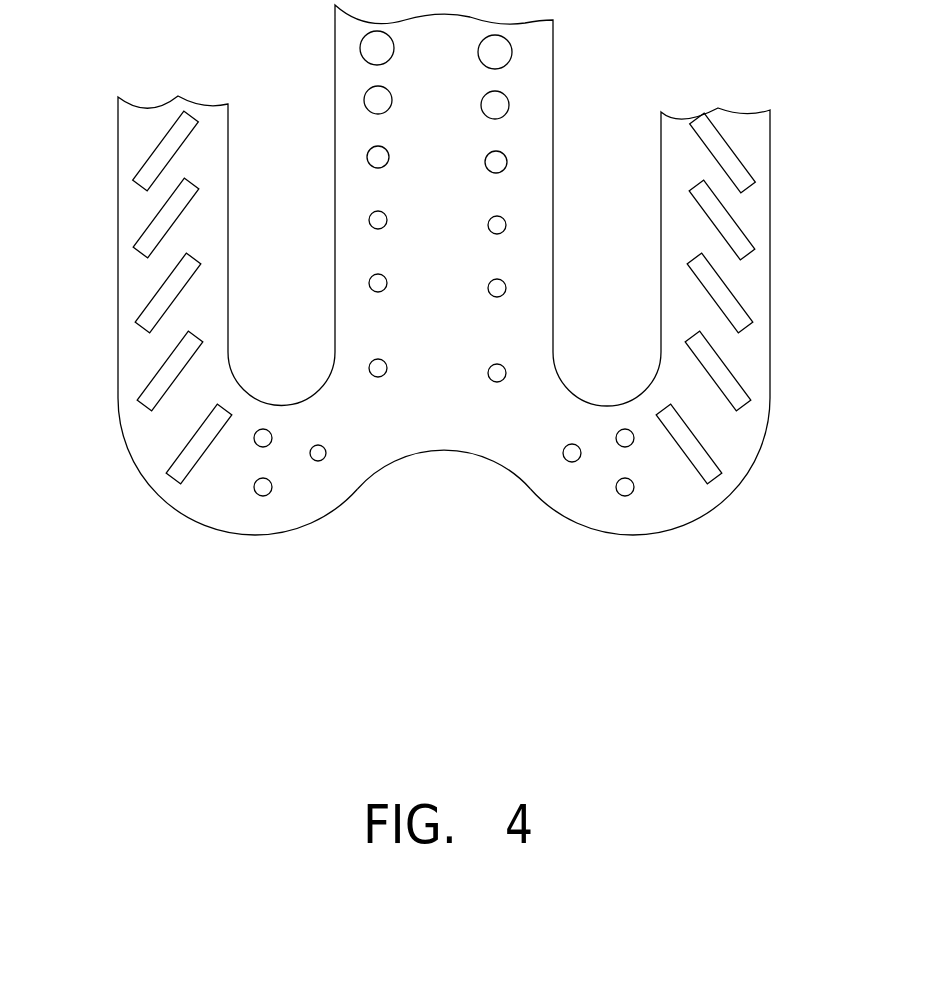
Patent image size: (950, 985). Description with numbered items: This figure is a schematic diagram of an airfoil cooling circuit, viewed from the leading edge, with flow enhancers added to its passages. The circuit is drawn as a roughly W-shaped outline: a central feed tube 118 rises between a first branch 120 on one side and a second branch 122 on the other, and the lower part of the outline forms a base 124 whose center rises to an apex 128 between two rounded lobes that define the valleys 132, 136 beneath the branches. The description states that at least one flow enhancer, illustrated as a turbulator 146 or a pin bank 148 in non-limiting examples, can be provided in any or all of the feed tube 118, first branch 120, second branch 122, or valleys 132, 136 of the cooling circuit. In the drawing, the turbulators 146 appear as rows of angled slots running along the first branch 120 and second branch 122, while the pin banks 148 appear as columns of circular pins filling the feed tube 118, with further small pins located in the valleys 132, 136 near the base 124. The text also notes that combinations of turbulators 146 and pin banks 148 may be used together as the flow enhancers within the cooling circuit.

The feed tube 118 is at (360, 78).
The first branch 120 is at (140, 365).
The second branch 122 is at (735, 358).
The base portion 124 is at (449, 483).
The central apex of base 128 is at (432, 452).
The valley 132 is at (222, 498).
The valley 136 is at (680, 505).
The turbulator 146 is at (738, 247).
The pin bank 148 is at (497, 105).